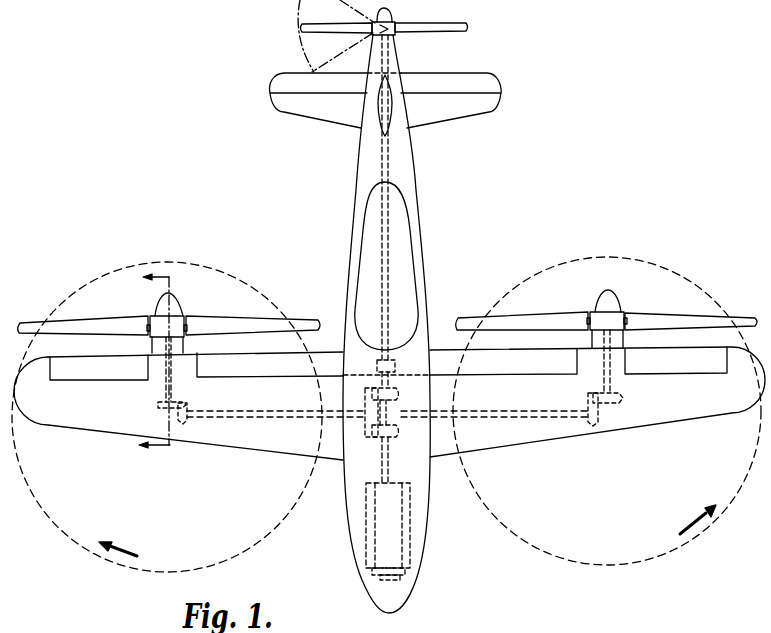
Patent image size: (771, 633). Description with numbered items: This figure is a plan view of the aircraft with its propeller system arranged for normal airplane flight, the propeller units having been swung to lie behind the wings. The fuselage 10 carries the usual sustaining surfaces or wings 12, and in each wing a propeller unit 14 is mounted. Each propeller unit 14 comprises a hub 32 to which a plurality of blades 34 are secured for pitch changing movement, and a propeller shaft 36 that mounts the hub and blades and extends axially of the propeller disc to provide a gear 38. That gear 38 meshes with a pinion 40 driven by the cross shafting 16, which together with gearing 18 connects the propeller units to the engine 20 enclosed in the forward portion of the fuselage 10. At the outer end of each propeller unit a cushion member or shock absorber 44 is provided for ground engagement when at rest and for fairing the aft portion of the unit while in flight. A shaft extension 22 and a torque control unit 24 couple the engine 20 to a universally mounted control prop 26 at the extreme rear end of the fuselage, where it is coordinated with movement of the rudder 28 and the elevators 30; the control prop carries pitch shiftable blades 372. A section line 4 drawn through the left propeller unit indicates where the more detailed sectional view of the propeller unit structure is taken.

The fuselage 10 is at (426, 523).
The sustaining surfaces or wings 12 is at (63, 418).
The propeller unit 14 is at (183, 323).
The cross shafting 16 is at (226, 420).
The gearing 18 is at (376, 436).
The engine 20 is at (411, 561).
The shaft extension 22 is at (395, 52).
The torque control unit 24 is at (395, 362).
The control prop 26 is at (395, 16).
The rudder 28 is at (388, 97).
The elevators 30 is at (477, 78).
The hub 32 is at (160, 323).
The blades 34 is at (300, 320).
The propeller shaft 36 is at (172, 375).
The gear 38 is at (162, 403).
The pinion 40 is at (188, 407).
The cushion member or shock absorber 44 is at (173, 298).
The pitch shiftable blades 372 is at (327, 31).
The section line 4- 4 is at (146, 370).